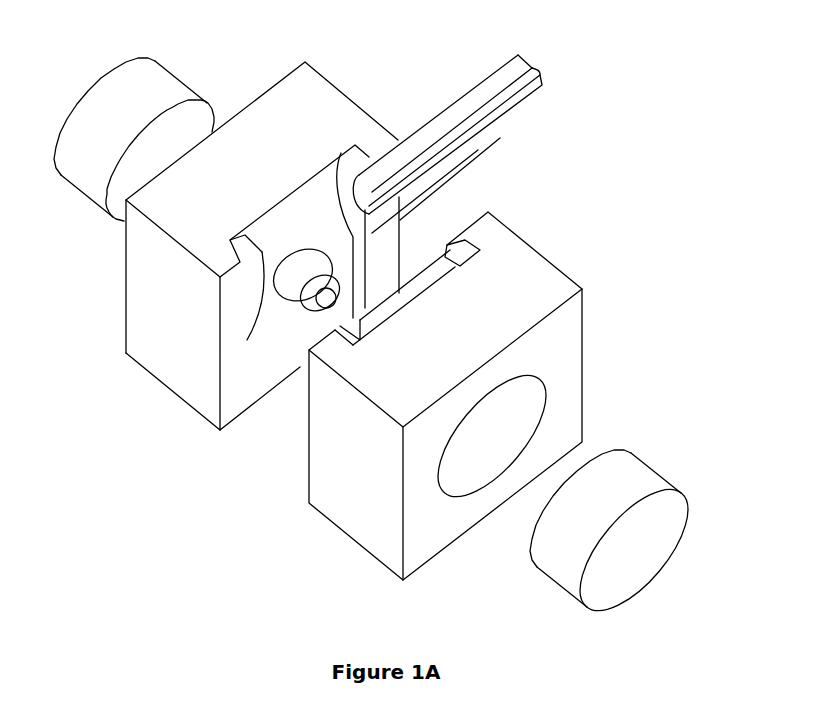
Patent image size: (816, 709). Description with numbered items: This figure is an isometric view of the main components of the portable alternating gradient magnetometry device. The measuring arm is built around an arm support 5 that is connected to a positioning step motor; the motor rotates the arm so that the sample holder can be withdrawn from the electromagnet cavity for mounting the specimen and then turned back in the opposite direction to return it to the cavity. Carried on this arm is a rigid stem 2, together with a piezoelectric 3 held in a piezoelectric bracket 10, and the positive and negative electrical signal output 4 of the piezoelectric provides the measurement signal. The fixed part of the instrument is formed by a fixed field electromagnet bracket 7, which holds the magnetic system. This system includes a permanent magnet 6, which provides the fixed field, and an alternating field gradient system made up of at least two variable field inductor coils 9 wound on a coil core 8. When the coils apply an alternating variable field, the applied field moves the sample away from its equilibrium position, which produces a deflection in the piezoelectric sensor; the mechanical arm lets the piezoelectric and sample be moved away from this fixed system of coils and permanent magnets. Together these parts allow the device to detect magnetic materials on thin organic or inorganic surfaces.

The rigid stem 2 is at (500, 216).
The piezoelectric 3 is at (412, 268).
The electrical signal output of the piezoelectric 4 is at (445, 174).
The arm support 5 is at (533, 53).
The permanent magnet 6 is at (660, 462).
The fixed field electromagnet bracket 7 is at (588, 332).
The coil core 8 is at (302, 313).
The variable field inductor coils 9 is at (268, 297).
The piezoelectric bracket 10 is at (543, 83).